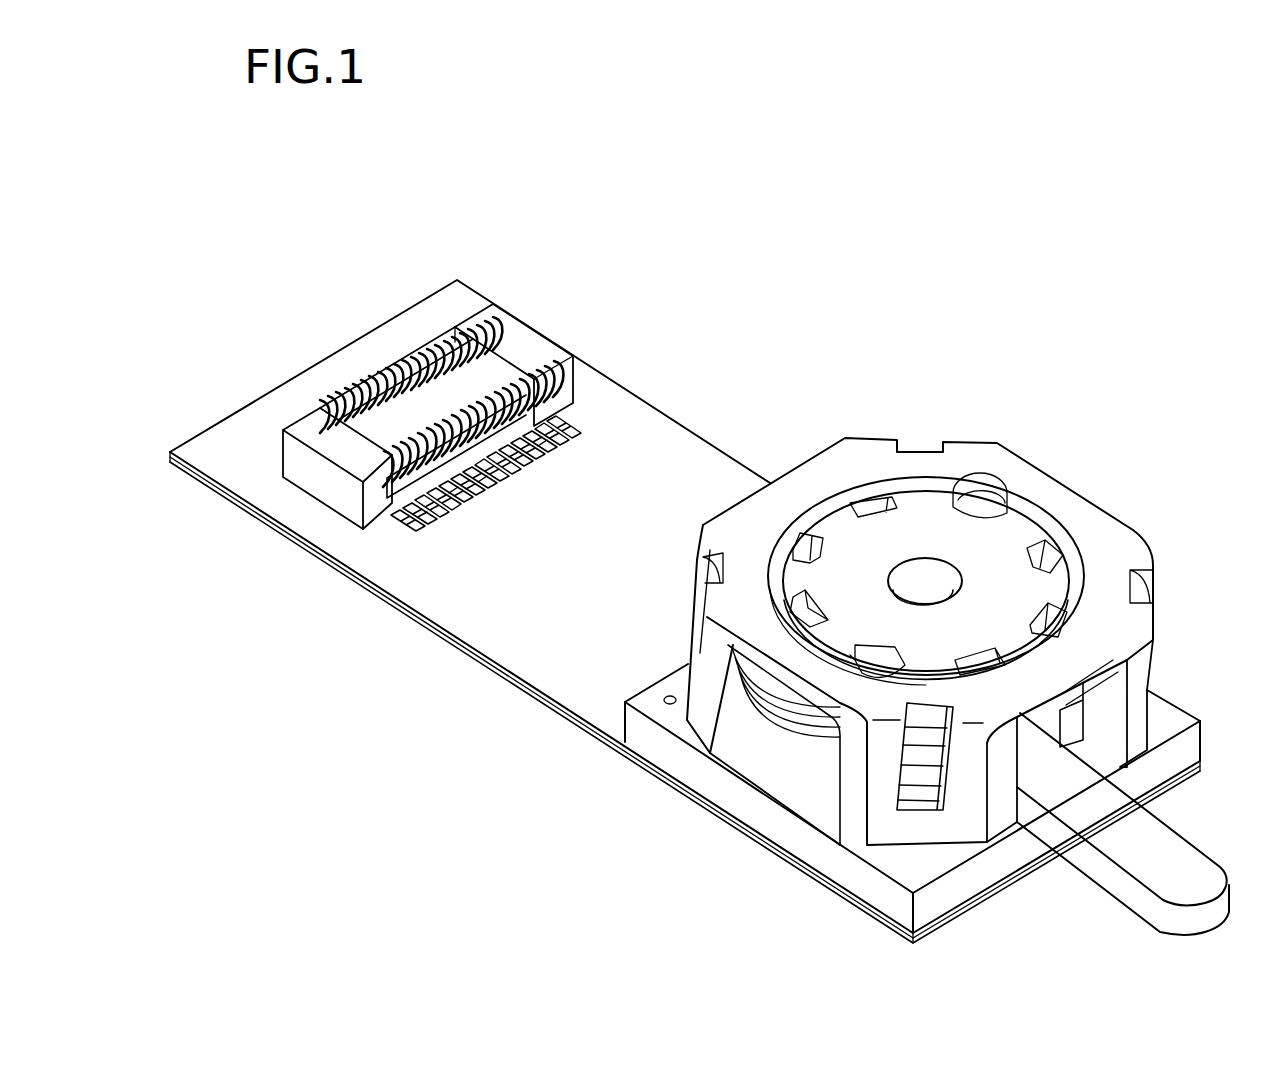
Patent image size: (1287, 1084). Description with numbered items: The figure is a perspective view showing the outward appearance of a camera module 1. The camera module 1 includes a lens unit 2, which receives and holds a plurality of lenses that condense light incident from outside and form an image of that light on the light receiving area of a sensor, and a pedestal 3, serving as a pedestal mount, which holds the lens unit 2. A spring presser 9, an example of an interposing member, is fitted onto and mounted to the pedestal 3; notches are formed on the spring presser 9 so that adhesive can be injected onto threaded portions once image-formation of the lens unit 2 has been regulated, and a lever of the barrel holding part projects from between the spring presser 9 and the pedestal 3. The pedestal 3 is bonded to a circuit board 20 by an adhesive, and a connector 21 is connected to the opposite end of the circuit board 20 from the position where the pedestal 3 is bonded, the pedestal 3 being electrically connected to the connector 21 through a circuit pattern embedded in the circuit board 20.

The camera module 1 is at (793, 257).
The lens unit 2 is at (917, 517).
The pedestal 3 is at (812, 820).
The spring presser 9 is at (1108, 560).
The circuit board 20 is at (657, 463).
The connector 21 is at (527, 330).